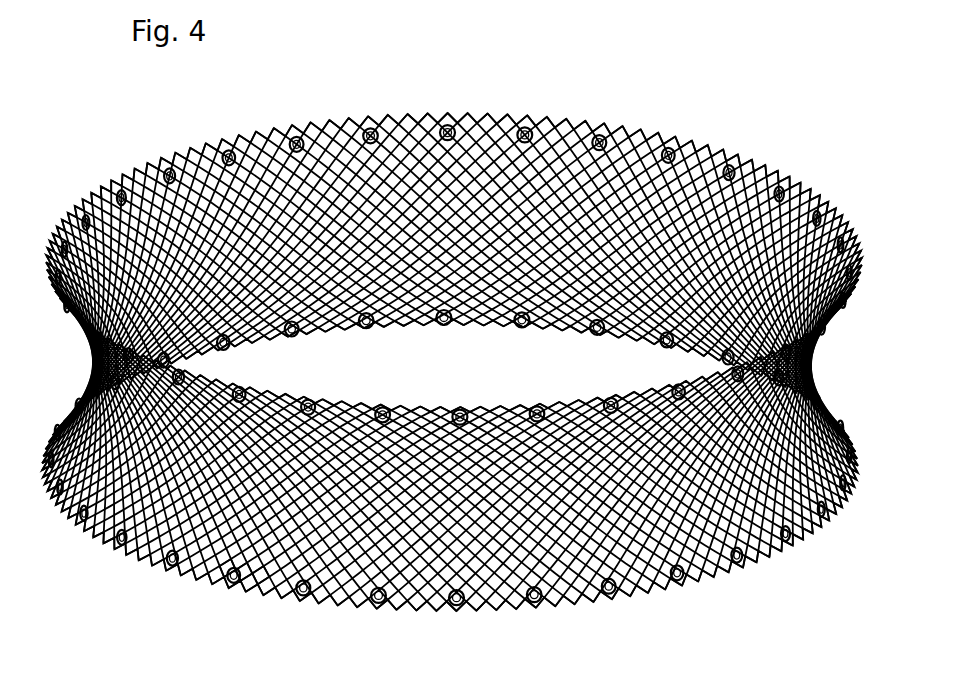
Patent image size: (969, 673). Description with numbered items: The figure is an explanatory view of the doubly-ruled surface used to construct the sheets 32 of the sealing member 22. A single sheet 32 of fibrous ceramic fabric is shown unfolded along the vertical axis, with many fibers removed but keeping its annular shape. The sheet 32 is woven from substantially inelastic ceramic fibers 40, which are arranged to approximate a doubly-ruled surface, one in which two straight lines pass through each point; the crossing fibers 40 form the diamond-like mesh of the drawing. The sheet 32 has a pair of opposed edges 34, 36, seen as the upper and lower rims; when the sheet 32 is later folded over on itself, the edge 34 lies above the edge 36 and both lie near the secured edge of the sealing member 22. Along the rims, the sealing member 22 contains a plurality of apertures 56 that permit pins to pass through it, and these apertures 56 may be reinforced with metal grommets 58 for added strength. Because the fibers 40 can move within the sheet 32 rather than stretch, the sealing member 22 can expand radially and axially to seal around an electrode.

The sealing member 22 is at (452, 356).
The sheet 32 is at (76, 185).
The edge 34 is at (410, 108).
The edge 36 is at (537, 600).
The fibers 40 is at (252, 575).
The apertures 56 is at (523, 121).
The metal grommets 58 is at (602, 128).